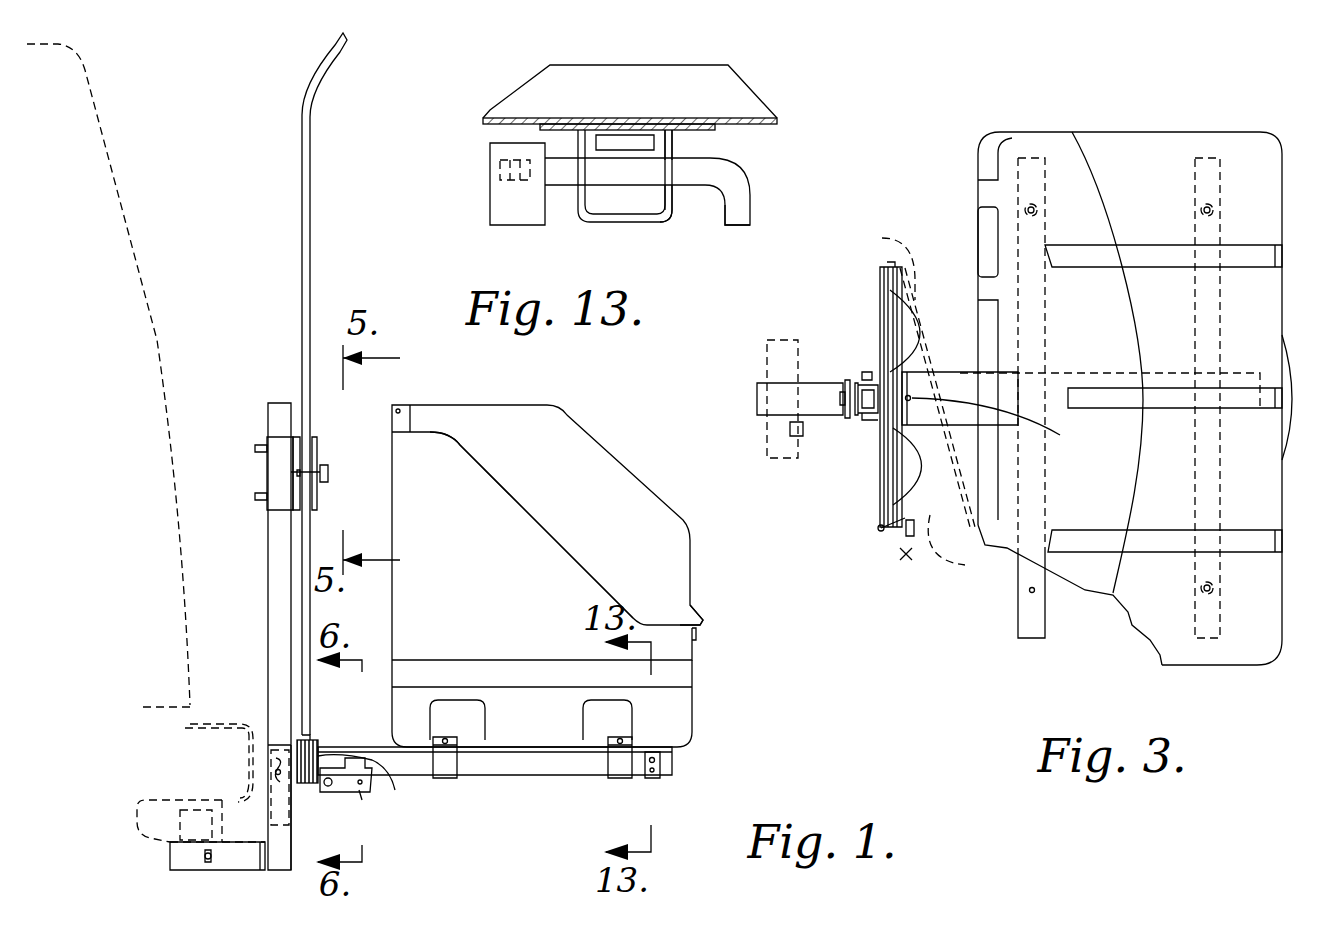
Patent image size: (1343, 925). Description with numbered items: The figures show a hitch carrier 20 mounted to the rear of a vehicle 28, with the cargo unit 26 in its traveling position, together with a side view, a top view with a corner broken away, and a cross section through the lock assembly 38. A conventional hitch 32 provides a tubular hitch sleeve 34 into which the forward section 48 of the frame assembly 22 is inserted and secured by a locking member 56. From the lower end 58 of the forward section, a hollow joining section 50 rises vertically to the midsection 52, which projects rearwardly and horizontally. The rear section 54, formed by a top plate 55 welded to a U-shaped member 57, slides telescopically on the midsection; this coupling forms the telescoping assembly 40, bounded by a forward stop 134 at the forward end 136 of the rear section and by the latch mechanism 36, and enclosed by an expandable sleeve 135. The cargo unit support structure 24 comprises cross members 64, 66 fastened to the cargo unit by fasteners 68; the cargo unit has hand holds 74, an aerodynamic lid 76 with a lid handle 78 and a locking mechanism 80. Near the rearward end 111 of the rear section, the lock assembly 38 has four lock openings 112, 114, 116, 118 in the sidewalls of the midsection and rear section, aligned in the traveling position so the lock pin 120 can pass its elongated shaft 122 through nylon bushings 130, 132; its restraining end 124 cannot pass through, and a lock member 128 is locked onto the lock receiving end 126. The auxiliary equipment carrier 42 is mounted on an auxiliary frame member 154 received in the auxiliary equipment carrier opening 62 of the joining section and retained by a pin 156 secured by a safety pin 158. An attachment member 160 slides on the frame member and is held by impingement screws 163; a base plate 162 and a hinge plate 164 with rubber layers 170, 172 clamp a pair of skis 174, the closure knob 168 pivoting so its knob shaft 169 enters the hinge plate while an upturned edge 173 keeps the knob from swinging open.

In FIG. 1, the hitch carrier 20 is at (580, 412).
In FIG. 3, the hitch carrier 20 is at (963, 133).
In FIG. 1, the frame assembly 22 is at (383, 840).
In FIG. 1, the cargo unit support structure 24 is at (452, 790).
In FIG. 1, the cargo unit 26 is at (547, 576).
In FIG. 13, the cargo unit 26 is at (675, 70).
In FIG. 3, the cargo unit 26 is at (1121, 398).
In FIG. 1, the vehicle 28 is at (93, 60).
In FIG. 1, the hitch 32 is at (168, 793).
In FIG. 1, the hitch sleeve 34 is at (170, 866).
In FIG. 3, the hitch sleeve 34 is at (778, 392).
In FIG. 1, the latch mechanism 36 is at (382, 798).
In FIG. 1, the lock assembly 38 is at (660, 796).
In FIG. 13, the lock assembly 38 is at (468, 132).
In FIG. 1, the telescoping assembly 40 is at (302, 790).
In FIG. 1, the auxiliary equipment carrier 42 is at (243, 292).
In FIG. 3, the auxiliary equipment carrier 42 is at (944, 250).
In FIG. 1, the forward section 48 is at (265, 858).
In FIG. 1, the joining section 50 is at (275, 820).
In FIG. 13, the midsection 52 is at (650, 220).
In FIG. 1, the rear section 54 is at (565, 770).
In FIG. 13, the rear section 54 is at (672, 213).
In FIG. 3, the rear section 54 is at (960, 400).
In FIG. 13, the top plate 55 is at (592, 125).
In FIG. 1, the locking member 56 is at (207, 866).
In FIG. 3, the locking member 56 is at (790, 430).
In FIG. 13, the U-shaped member 57 is at (585, 215).
In FIG. 1, the lower end 58 is at (280, 865).
In FIG. 3, the auxiliary equipment carrier opening 62 is at (856, 385).
In FIG. 1, the cross member 64 is at (457, 748).
In FIG. 3, the cross member 64 is at (1045, 178).
In FIG. 1, the cross member 66 is at (607, 740).
In FIG. 3, the cross member 66 is at (1220, 178).
In FIG. 1, the fasteners 68 is at (445, 738).
In FIG. 3, the fasteners 68 is at (1037, 210).
In FIG. 1, the hand holds 74 is at (626, 712).
In FIG. 1, the lid 76 is at (595, 452).
In FIG. 1, the lid handle 78 is at (700, 618).
In FIG. 3, the lid handle 78 is at (1293, 420).
In FIG. 1, the locking mechanism 80 is at (698, 636).
In FIG. 1, the rearward end 111 is at (662, 757).
In FIG. 3, the rearward end 111 is at (1235, 375).
In FIG. 13, the first lock opening 112 is at (590, 160).
In FIG. 13, the second lock opening 114 is at (575, 138).
In FIG. 13, the third lock opening 116 is at (655, 135).
In FIG. 13, the fourth lock opening 118 is at (670, 125).
In FIG. 13, the lock pin 120 is at (750, 178).
In FIG. 13, the elongated shaft 122 is at (633, 170).
In FIG. 13, the restraining end 124 is at (742, 208).
In FIG. 13, the lock receiving end 126 is at (490, 197).
In FIG. 1, the lock member 128 is at (658, 778).
In FIG. 13, the lock member 128 is at (490, 153).
In FIG. 13, the nylon bushing 130 is at (580, 158).
In FIG. 13, the nylon bushing 132 is at (680, 150).
In FIG. 1, the forward stop 134 is at (320, 750).
In FIG. 3, the forward stop 134 is at (1008, 426).
In FIG. 1, the expandable sleeve 135 is at (305, 735).
In FIG. 1, the forward end 136 is at (372, 778).
In FIG. 1, the auxiliary frame member 154 is at (278, 534).
In FIG. 1, the pin 156 is at (276, 773).
In FIG. 3, the pin 156 is at (873, 418).
In FIG. 1, the safety pin 158 is at (280, 760).
In FIG. 1, the attachment member 160 is at (275, 440).
In FIG. 1, the base plate 162 is at (302, 442).
In FIG. 3, the base plate 162 is at (880, 460).
In FIG. 1, the impingement screws 163 is at (258, 497).
In FIG. 3, the impingement screws 163 is at (835, 390).
In FIG. 1, the hinge plate 164 is at (318, 445).
In FIG. 3, the hinge plate 164 is at (877, 262).
In FIG. 1, the closure knob 168 is at (330, 474).
In FIG. 3, the closure knob 168 is at (910, 562).
In FIG. 1, the knob shaft 169 is at (318, 500).
In FIG. 3, the knob shaft 169 is at (880, 530).
In FIG. 3, the rubber layer 170 is at (888, 482).
In FIG. 3, the rubber layer 172 is at (968, 545).
In FIG. 3, the upturned edge 173 is at (970, 515).
In FIG. 1, the skis 174 is at (320, 62).
In FIG. 3, the skis 174 is at (905, 325).